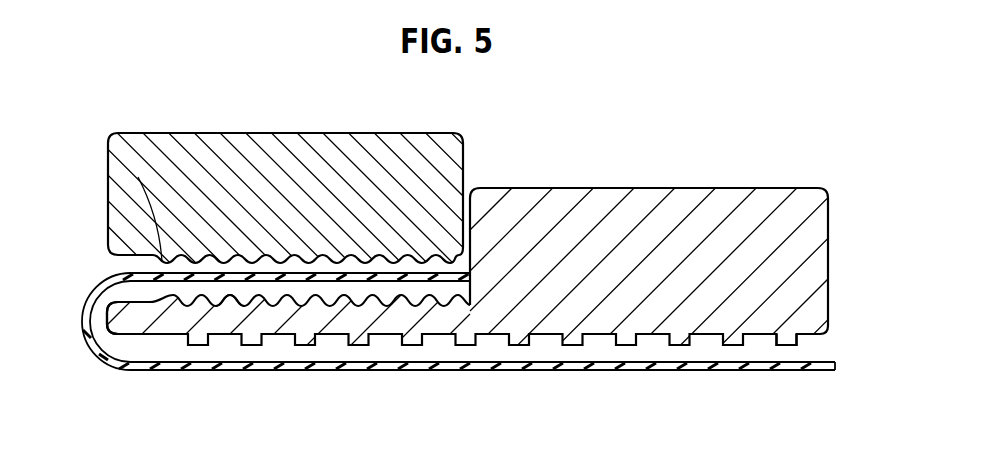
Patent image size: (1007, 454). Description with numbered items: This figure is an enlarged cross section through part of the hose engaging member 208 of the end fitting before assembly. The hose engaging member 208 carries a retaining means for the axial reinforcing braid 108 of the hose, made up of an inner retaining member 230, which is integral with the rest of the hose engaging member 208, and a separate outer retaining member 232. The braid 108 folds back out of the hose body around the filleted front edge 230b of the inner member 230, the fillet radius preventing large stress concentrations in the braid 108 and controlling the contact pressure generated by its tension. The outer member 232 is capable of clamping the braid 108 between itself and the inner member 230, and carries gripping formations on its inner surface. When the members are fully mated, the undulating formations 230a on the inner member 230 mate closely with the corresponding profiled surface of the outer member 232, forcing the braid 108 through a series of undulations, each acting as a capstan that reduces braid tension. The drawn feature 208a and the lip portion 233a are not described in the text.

The braid 108 is at (84, 333).
The hose engaging member 208 is at (652, 188).
The protrusion of second housing block 208a is at (792, 344).
The inner retaining member 230 is at (273, 322).
The undulating formations 230a is at (228, 300).
The filleted front edge 230b is at (110, 306).
The outer retaining member 232 is at (350, 133).
The lip portion of first housing block 233a is at (108, 155).